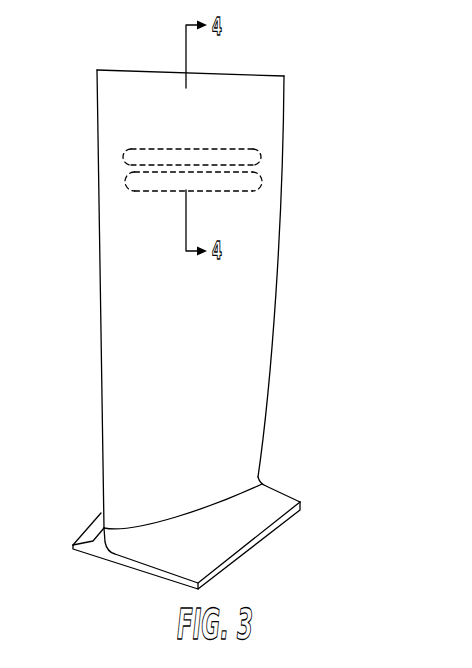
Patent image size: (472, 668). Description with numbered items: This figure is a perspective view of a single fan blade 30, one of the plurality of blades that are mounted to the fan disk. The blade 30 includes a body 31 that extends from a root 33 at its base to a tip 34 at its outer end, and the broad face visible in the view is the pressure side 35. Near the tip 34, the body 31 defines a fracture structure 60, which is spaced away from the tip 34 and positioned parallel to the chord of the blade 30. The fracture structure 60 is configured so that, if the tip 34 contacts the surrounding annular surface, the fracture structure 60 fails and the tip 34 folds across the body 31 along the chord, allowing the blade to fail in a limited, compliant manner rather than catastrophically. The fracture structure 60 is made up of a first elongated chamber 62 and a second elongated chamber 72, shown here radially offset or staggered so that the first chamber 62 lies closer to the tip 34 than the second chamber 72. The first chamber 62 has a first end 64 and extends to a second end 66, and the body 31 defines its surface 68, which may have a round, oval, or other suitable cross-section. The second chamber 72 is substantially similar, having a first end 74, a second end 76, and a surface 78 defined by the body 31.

The fan blade 30 is at (241, 308).
The body 31 is at (201, 305).
The root 33 is at (227, 525).
The tip 34 is at (284, 75).
The pressure side 35 is at (232, 440).
The fracture structure 60 is at (245, 186).
The first elongated chamber 62 is at (239, 125).
The first end 64 is at (260, 157).
The second end 66 is at (123, 159).
The surface 68 is at (200, 151).
The second elongated chamber 72 is at (231, 211).
The first end 74 is at (299, 165).
The second end 76 is at (150, 193).
The surface 78 is at (220, 191).